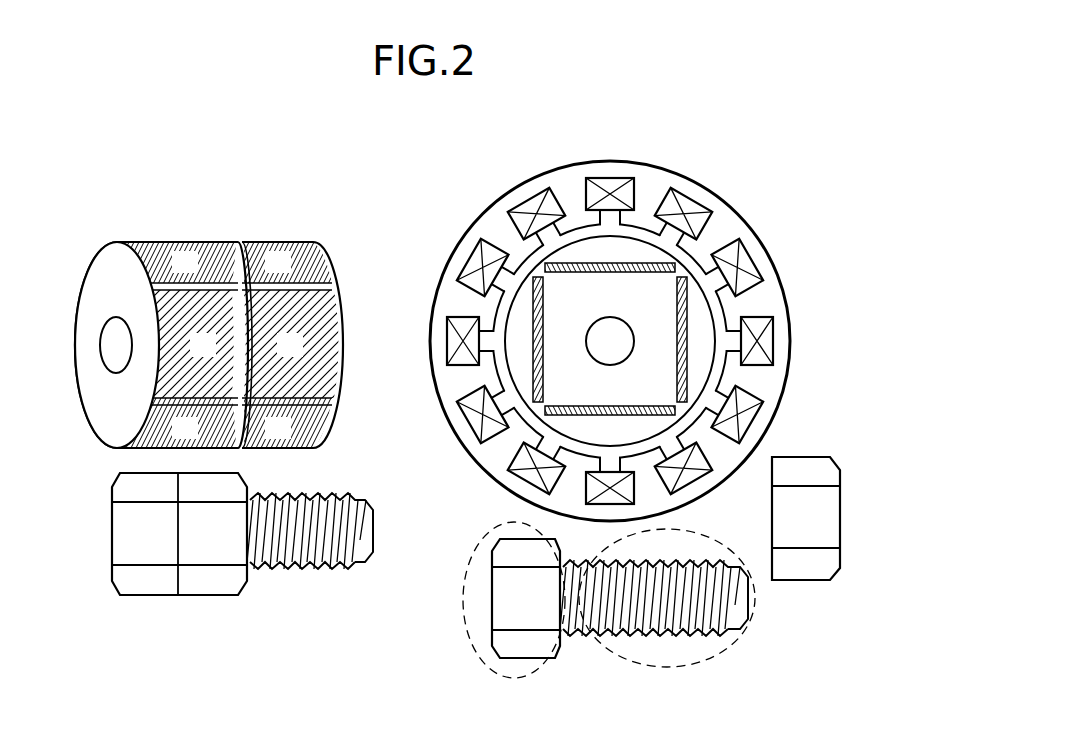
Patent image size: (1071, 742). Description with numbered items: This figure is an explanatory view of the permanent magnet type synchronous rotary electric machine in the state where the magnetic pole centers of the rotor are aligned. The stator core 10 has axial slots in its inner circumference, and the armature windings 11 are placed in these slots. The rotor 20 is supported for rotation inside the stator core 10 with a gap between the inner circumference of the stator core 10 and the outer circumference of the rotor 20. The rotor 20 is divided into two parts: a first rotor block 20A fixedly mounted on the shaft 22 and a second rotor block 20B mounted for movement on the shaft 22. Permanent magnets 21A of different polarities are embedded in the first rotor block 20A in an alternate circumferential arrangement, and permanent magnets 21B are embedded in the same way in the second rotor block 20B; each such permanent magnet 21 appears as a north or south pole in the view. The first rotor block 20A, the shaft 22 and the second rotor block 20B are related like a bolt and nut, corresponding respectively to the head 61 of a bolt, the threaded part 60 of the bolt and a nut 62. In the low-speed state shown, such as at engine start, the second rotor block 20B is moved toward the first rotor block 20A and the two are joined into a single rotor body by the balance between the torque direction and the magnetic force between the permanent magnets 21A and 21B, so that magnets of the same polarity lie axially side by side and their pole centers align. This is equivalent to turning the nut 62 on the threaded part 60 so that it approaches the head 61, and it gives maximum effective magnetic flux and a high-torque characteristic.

The stator core 10 is at (610, 312).
The armature windings 11 is at (688, 212).
The rotor 20 is at (668, 290).
The first rotor block 20A is at (163, 304).
The second rotor block 20B is at (298, 305).
The permanent magnet 21 is at (688, 308).
The permanent magnets of the first rotor body 21A is at (223, 313).
The permanent magnets of the second rotor body 21B is at (263, 300).
The shaft 22 is at (602, 318).
The threaded part of the bolt 60 is at (372, 547).
The head of the bolt 61 is at (130, 531).
The nut 62 is at (818, 466).